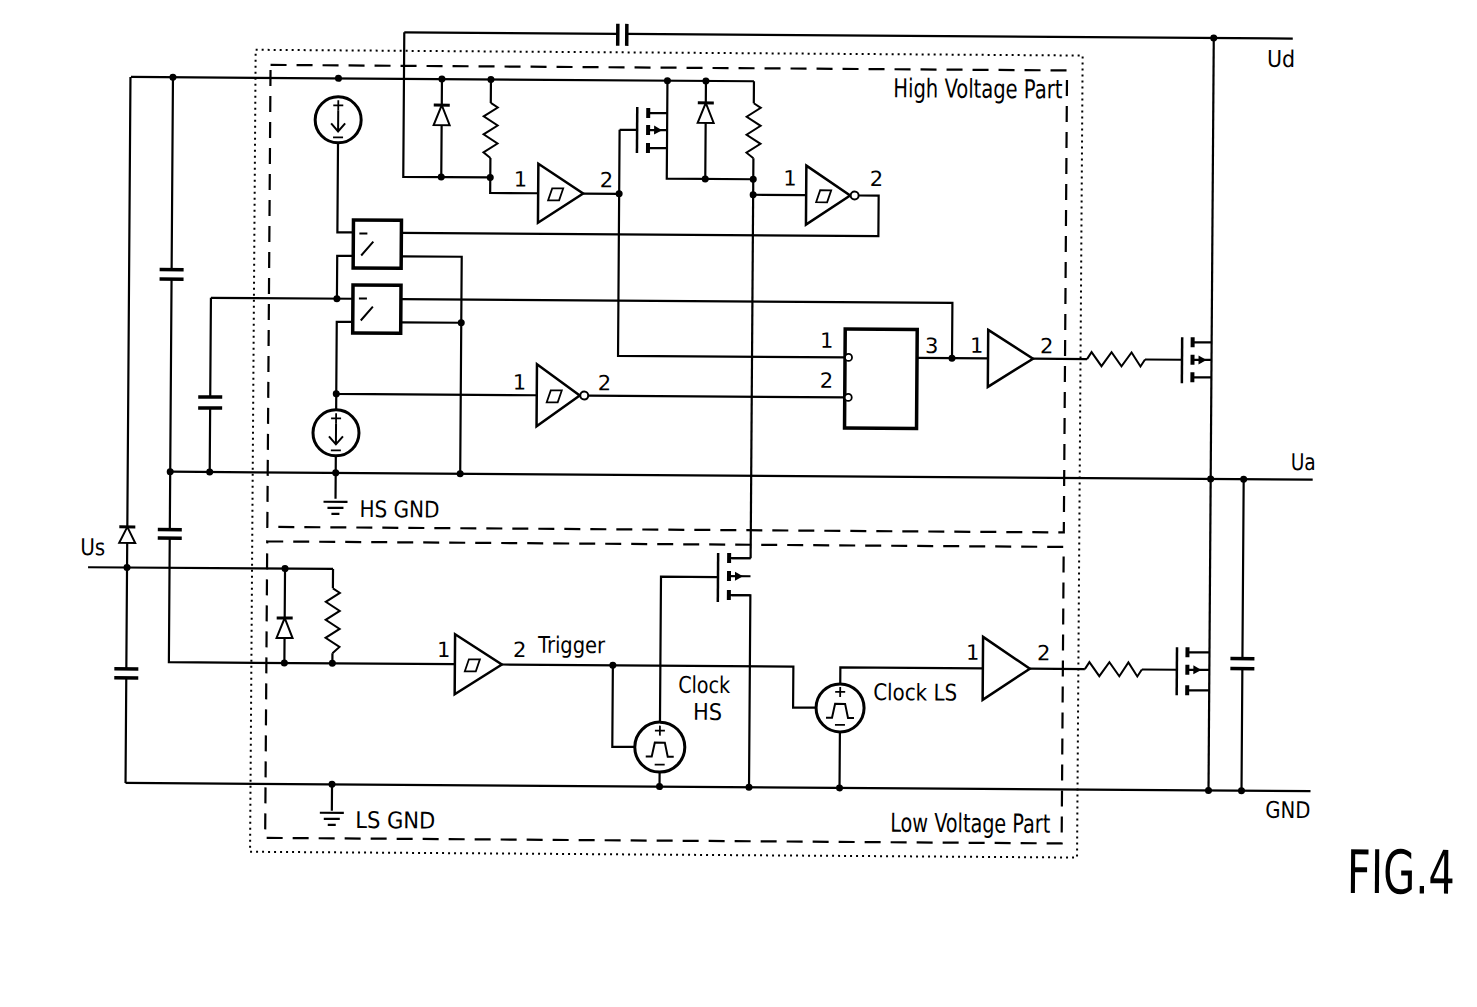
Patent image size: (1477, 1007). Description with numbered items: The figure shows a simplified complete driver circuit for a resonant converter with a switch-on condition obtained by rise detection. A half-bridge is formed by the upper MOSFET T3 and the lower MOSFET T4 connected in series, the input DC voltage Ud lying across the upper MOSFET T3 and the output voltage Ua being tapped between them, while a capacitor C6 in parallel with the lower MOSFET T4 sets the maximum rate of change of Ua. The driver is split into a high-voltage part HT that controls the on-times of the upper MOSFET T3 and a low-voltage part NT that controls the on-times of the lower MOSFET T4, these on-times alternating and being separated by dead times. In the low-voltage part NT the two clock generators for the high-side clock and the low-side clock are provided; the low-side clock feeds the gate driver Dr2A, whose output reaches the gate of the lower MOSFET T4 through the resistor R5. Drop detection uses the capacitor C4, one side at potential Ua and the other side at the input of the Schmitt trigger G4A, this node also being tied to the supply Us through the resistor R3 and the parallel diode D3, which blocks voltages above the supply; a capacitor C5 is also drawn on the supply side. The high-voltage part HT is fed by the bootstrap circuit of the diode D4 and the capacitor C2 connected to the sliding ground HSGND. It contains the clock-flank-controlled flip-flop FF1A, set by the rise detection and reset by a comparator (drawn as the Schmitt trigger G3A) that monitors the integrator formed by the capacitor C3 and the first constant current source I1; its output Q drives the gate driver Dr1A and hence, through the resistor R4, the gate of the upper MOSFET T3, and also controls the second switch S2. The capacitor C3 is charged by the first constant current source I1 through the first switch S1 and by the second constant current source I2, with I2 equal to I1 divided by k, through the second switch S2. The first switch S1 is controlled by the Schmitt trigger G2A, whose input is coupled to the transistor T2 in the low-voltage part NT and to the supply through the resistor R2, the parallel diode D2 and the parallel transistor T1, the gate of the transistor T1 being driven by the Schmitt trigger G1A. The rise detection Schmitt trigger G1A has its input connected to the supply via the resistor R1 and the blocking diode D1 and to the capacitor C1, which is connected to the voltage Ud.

The capacitor C1 is at (639, 23).
The bootstrap capacitor C2 is at (185, 260).
The integrator capacitor C3 is at (221, 387).
The drop detection capacitor C4 is at (181, 517).
The capacitor C5 is at (136, 657).
The capacitor for setting dUa/dtmax C6 is at (1251, 649).
The diode D1 is at (458, 128).
The diode D2 is at (720, 130).
The diode D3 is at (298, 639).
The bootstrap diode D4 is at (139, 519).
The resistor R1 is at (506, 128).
The resistor R2 is at (768, 130).
The resistor R3 is at (348, 620).
The resistor R4 is at (1116, 344).
The resistor R5 is at (1113, 654).
The first constant current source I1 is at (354, 120).
The second constant current source I2 is at (377, 433).
The first switch S1 is at (377, 228).
The second switch S2 is at (376, 326).
The transistor T1 is at (639, 117).
The transistor T2 is at (752, 575).
The upper MOSFET T3 is at (1182, 352).
The lower MOSFET T4 is at (1178, 663).
The Schmitt trigger G1A is at (564, 180).
The Schmitt trigger G2A is at (834, 181).
The Schmitt trigger inverter G3A is at (564, 384).
The Schmitt trigger G4A is at (482, 651).
The clock-flank-controlled flip-flop FF1A is at (881, 365).
The gate driver Dr1A is at (1014, 343).
The gate driver Dr2A is at (1010, 656).
The high-voltage part HT is at (951, 156).
The low-voltage part NT is at (949, 591).